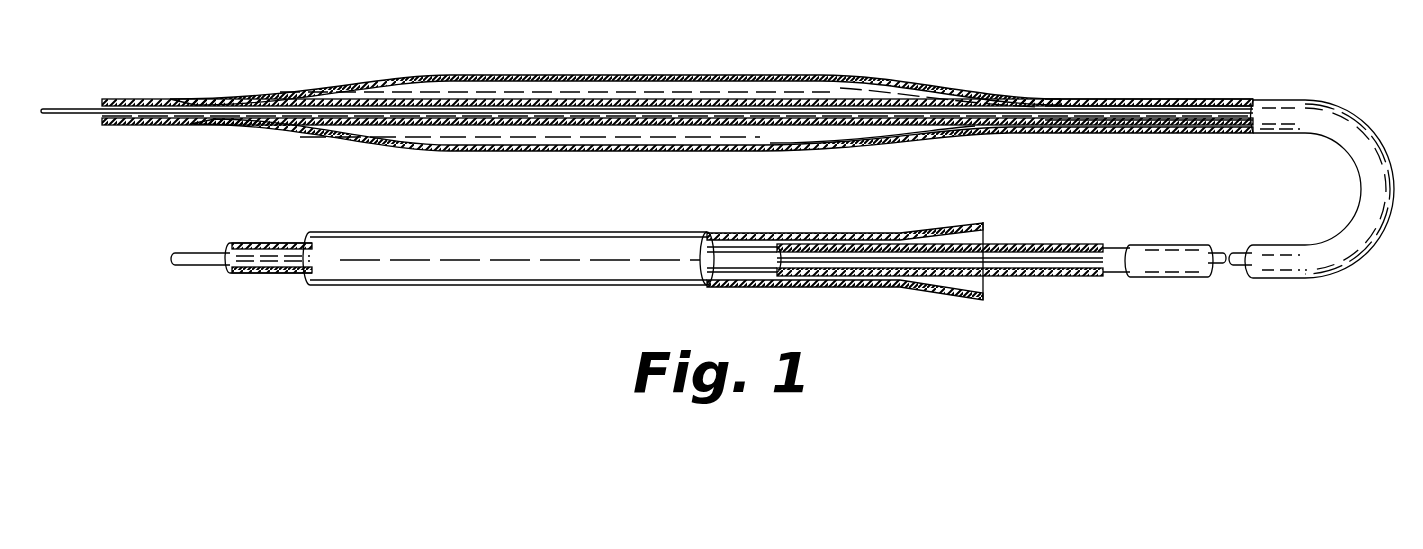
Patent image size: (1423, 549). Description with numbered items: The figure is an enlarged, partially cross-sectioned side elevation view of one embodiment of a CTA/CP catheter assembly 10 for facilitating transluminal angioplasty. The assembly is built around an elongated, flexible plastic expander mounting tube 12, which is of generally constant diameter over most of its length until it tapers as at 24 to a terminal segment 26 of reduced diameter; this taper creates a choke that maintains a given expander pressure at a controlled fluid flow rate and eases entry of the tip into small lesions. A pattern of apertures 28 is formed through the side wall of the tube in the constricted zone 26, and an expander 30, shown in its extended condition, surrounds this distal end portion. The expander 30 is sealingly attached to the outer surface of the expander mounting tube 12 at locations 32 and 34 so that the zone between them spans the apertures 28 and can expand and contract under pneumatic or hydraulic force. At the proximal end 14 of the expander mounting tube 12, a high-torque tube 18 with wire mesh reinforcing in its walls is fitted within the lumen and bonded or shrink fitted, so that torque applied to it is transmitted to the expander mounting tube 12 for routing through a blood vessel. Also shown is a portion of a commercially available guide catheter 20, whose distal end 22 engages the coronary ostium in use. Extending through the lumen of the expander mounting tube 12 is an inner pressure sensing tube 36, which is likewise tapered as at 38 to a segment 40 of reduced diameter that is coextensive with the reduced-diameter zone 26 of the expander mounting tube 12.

The CTA/CP catheter assembly 10 is at (1252, 90).
The expander mounting tube 12 is at (1358, 133).
The proximal end of the expander mounting tube 14 is at (282, 266).
The high-torque tube 18 is at (940, 273).
The guide catheter 20 is at (640, 272).
The distal end of the guide catheter 22 is at (985, 223).
The taper of the expander mounting tube 24 is at (975, 126).
The terminal segment of reduced diameter 26 is at (662, 122).
The apertures 28 is at (325, 99).
The expander 30 is at (708, 152).
The attachment location 32 is at (1082, 99).
The attachment location 34 is at (160, 99).
The pressure sensing tube 36 is at (215, 258).
The taper of the pressure sensing tube 38 is at (1123, 116).
The reduced-diameter segment of the pressure sensing tube 40 is at (228, 114).